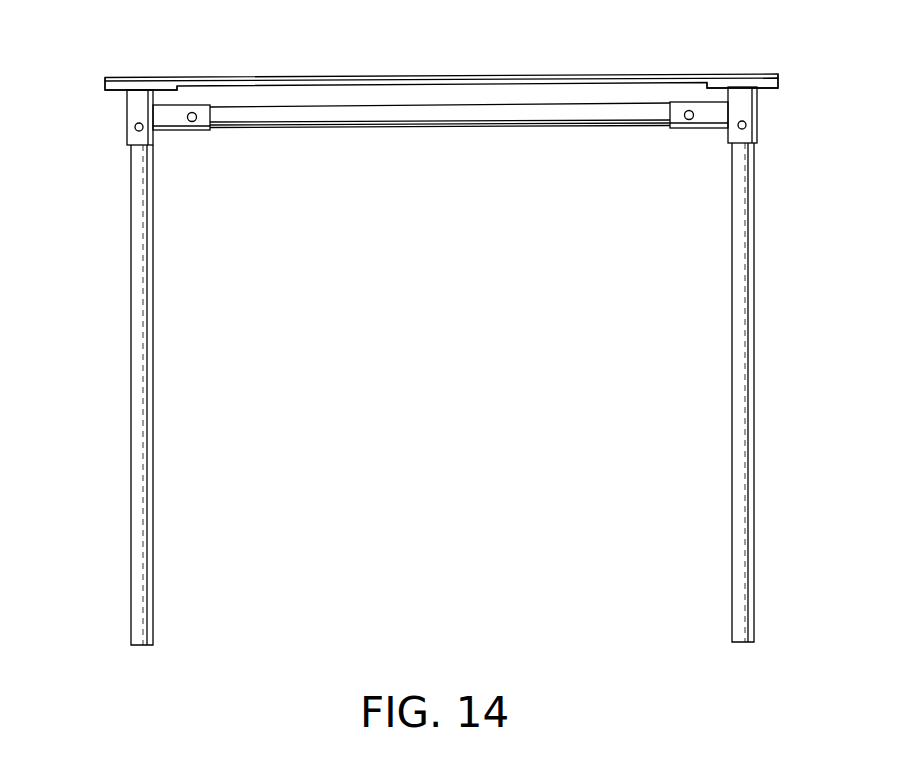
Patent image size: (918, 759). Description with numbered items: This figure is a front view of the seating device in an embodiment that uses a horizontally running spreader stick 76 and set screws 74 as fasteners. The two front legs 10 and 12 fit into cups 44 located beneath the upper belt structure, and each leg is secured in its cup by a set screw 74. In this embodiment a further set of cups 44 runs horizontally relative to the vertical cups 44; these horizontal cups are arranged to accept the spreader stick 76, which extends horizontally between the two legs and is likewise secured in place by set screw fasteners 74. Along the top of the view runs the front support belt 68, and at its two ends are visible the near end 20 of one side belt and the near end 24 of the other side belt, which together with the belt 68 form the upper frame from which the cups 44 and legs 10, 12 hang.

The front leg 10 is at (153, 298).
The front leg 12 is at (730, 305).
The near end of side belt 20 is at (105, 86).
The near end of side belt 24 is at (780, 75).
The cup 44 is at (125, 122).
The front support belt 68 is at (398, 75).
The set screw 74 is at (192, 112).
The spreader stick 76 is at (410, 128).